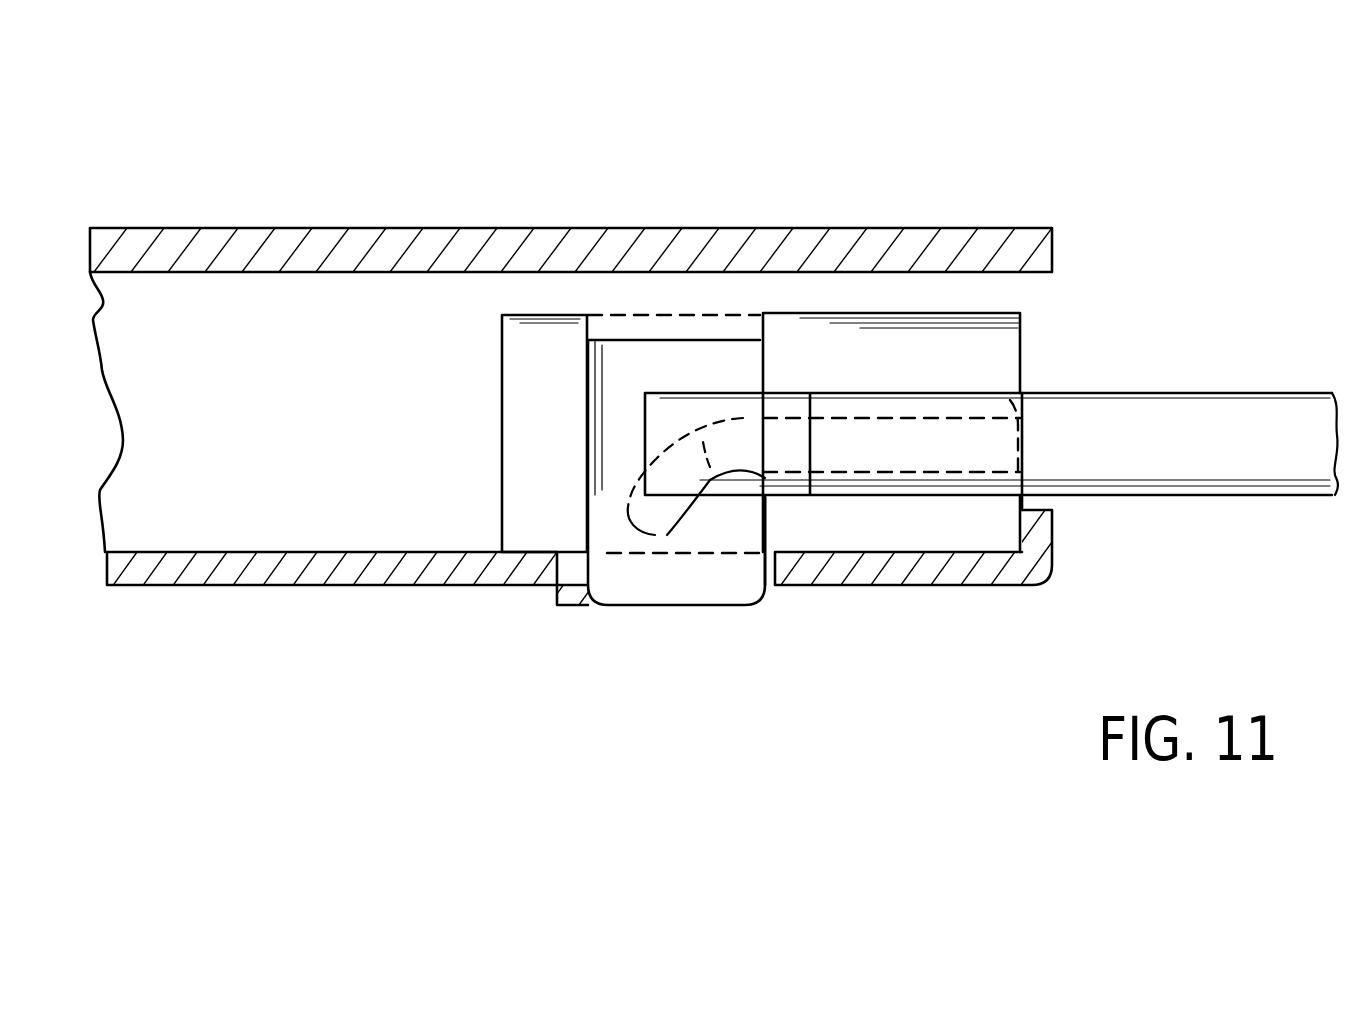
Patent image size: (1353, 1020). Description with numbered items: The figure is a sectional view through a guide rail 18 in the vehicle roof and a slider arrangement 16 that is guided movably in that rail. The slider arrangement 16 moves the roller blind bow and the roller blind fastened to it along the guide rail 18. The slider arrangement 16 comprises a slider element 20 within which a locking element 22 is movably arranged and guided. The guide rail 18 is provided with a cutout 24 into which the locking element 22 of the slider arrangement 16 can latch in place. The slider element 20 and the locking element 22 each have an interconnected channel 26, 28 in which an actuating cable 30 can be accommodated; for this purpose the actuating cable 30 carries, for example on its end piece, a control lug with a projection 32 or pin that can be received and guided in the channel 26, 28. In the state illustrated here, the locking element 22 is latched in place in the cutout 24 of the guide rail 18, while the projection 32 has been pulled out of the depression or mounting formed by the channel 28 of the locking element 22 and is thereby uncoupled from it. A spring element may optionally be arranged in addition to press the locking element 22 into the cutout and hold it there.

The slider arrangement 16 is at (481, 299).
The guide rail 18 is at (317, 572).
The slider element 20 is at (963, 309).
The locking element 22 is at (677, 583).
The cutout 24 is at (768, 575).
The channel 26 is at (886, 410).
The channel 28 is at (651, 510).
The actuating cable 30 is at (1215, 443).
The projection 32 is at (727, 458).